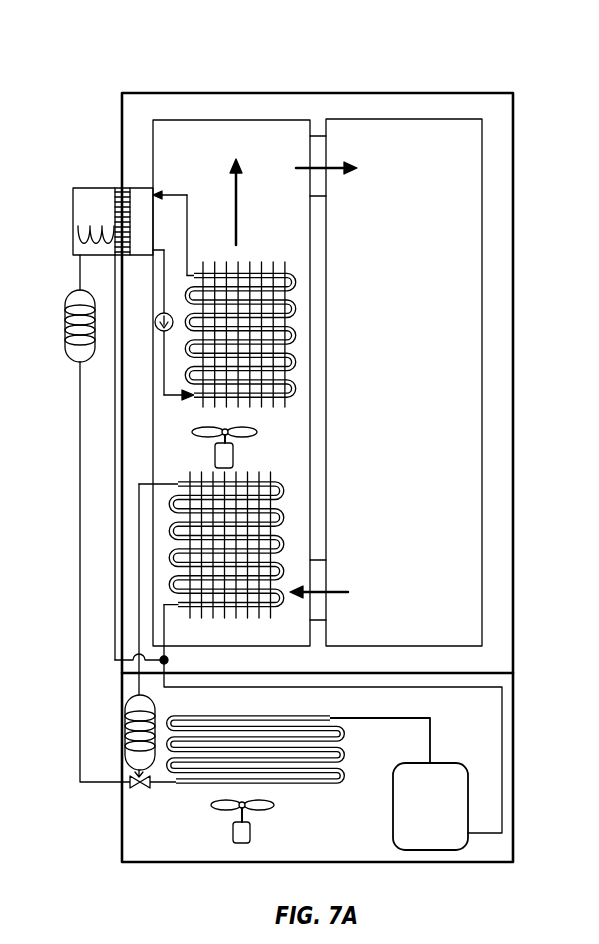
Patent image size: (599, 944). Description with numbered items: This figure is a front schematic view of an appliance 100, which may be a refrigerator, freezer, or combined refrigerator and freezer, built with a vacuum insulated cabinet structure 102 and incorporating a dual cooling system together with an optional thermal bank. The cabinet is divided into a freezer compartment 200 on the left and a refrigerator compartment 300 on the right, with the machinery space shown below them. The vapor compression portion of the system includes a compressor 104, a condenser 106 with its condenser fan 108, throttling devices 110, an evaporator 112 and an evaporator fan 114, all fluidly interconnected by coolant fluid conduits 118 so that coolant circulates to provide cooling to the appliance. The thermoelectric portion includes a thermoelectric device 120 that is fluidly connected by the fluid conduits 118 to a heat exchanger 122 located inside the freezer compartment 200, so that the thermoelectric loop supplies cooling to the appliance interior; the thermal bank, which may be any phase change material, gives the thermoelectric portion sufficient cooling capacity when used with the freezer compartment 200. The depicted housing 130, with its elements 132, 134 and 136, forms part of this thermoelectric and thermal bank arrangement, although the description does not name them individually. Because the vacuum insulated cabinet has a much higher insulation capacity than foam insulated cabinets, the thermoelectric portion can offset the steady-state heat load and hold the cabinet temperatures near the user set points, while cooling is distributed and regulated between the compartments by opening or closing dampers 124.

The appliance 100 is at (463, 62).
The vacuum insulated cabinet structure 102 is at (514, 296).
The compressor 104 is at (445, 817).
The condenser 106 is at (197, 786).
The condenser fan 108 is at (252, 840).
The throttling device 110 is at (66, 343).
The evaporator 112 is at (284, 522).
The evaporator fan 114 is at (234, 457).
The coolant fluid conduits 118 is at (113, 558).
The thermoelectric device 120 is at (143, 186).
The heat exchanger 122 is at (251, 270).
The dampers 124 is at (316, 186).
The heat exchanger housing 130 is at (72, 200).
The heating element 132 is at (78, 223).
The fin assembly 134 is at (115, 208).
The valve 136 is at (156, 312).
The freezer compartment 200 is at (238, 141).
The refrigerator compartment 300 is at (462, 206).